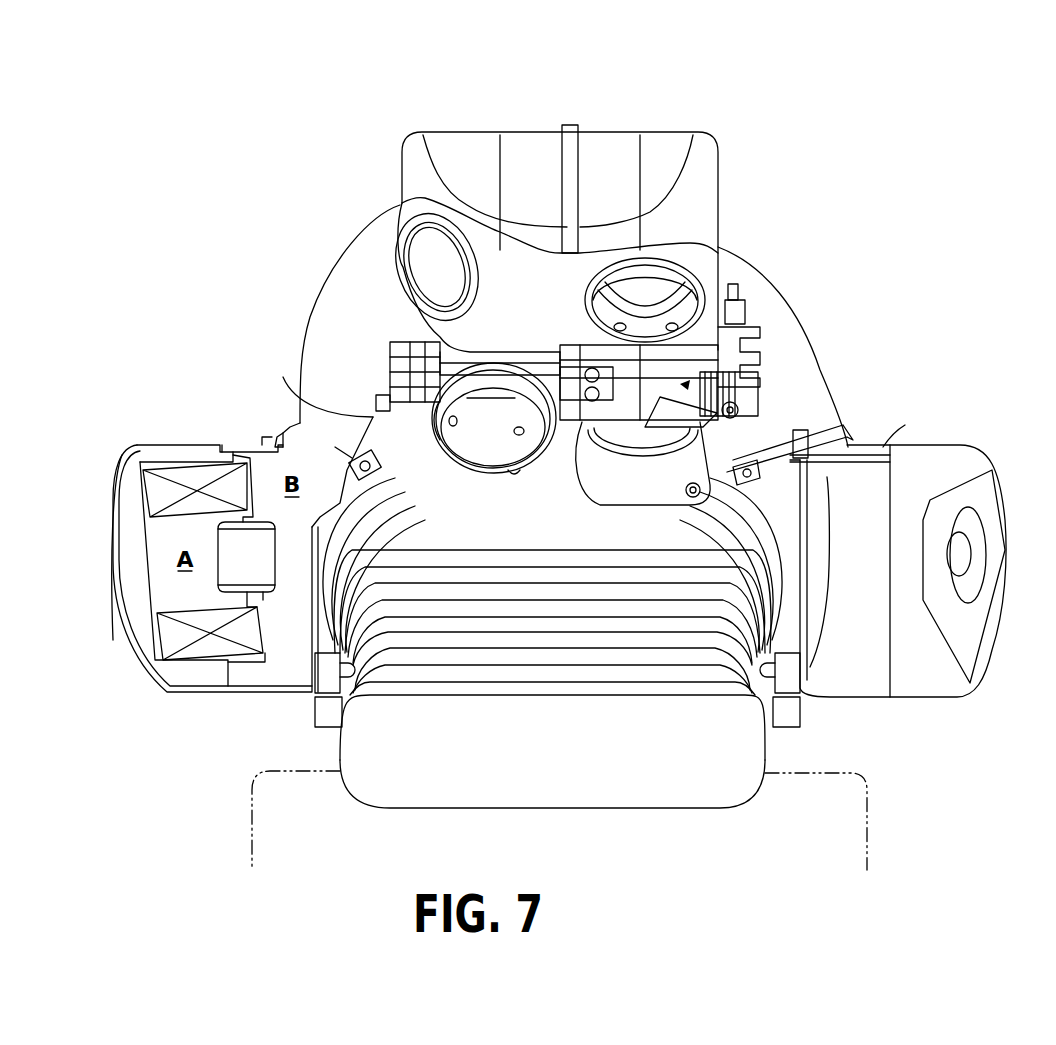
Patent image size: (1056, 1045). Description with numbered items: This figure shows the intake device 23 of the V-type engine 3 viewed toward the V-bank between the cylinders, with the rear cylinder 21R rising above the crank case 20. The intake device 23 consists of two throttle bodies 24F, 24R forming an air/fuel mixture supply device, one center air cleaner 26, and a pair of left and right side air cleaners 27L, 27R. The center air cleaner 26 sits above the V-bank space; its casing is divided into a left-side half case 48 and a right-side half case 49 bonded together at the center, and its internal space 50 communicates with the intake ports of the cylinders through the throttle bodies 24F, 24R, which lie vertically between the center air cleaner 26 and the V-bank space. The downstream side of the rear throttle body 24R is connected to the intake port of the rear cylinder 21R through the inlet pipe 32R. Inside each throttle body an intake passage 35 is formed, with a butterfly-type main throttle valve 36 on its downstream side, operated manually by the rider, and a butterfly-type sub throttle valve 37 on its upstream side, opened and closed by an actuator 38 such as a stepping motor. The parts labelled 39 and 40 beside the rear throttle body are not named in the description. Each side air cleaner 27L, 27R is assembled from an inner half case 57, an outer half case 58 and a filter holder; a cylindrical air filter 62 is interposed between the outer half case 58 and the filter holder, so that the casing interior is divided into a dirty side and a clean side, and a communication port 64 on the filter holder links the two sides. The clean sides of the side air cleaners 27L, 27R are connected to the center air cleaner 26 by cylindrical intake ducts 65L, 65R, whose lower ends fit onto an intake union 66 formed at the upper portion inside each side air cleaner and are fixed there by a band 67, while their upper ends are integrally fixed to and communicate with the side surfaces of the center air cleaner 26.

The V-type engine 3 is at (298, 748).
The crank case 20 is at (252, 836).
The rear cylinder 21R is at (648, 785).
The intake device 23 is at (254, 226).
The front throttle body 24F is at (455, 472).
The rear throttle body 24R is at (758, 352).
The center air cleaner 26 is at (640, 76).
The right side air cleaner 27R is at (103, 364).
The left side air cleaner 27L is at (1006, 372).
The inlet pipe 32R is at (620, 487).
The intake passage 35 is at (668, 275).
The main throttle valve 36 is at (502, 408).
The sub throttle valve 37 is at (660, 310).
The actuator 38 is at (403, 363).
The fuel injector 39 is at (760, 392).
The injector fixing bolt 40 is at (760, 415).
The left-side half case 48 is at (622, 130).
The right-side half case 49 is at (513, 130).
The internal space 50 is at (505, 278).
The inner half case 57 is at (245, 440).
The outer half case 58 is at (147, 440).
The air filter 62 is at (155, 493).
The communication port 64 is at (263, 562).
The intake duct 65R is at (310, 327).
The intake duct 65L is at (778, 295).
The intake union 66 is at (290, 420).
The band 67 is at (265, 435).